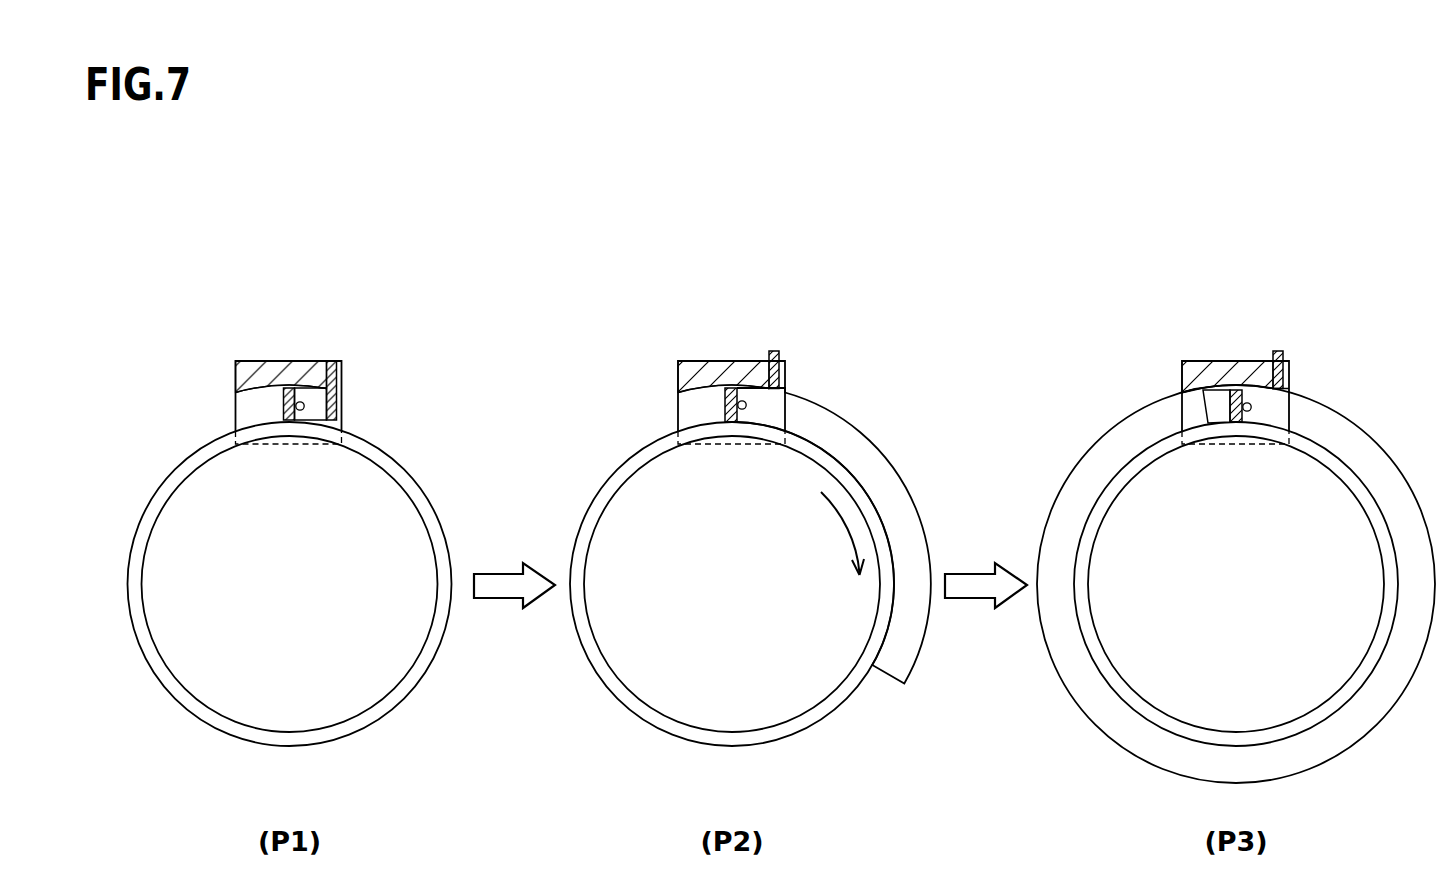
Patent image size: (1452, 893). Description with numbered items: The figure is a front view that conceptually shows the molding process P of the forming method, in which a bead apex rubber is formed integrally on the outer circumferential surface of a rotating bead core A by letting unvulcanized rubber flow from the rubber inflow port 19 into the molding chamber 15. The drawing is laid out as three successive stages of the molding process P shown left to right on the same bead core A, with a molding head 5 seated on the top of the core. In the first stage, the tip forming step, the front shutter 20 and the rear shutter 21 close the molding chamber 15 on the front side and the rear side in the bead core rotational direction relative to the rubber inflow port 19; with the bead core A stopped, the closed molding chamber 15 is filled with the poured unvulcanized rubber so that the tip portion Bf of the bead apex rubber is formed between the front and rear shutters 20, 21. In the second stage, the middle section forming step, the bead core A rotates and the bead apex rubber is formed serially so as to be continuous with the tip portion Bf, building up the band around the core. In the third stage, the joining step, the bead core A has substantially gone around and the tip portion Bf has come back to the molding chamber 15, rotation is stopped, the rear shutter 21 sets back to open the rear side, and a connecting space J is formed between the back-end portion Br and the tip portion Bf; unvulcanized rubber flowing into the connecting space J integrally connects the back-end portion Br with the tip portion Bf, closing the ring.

The molding process P is at (290, 537).
The bead core A is at (290, 628).
The head unit 5 is at (298, 392).
The molding chamber 15 is at (289, 361).
The rubber inflow port 19 is at (311, 473).
The front shutter 20 is at (389, 396).
The rear shutter 21 is at (219, 409).
The tip portion Bf is at (1236, 521).
The back-end portion Br is at (1249, 352).
The connecting space J is at (1216, 455).